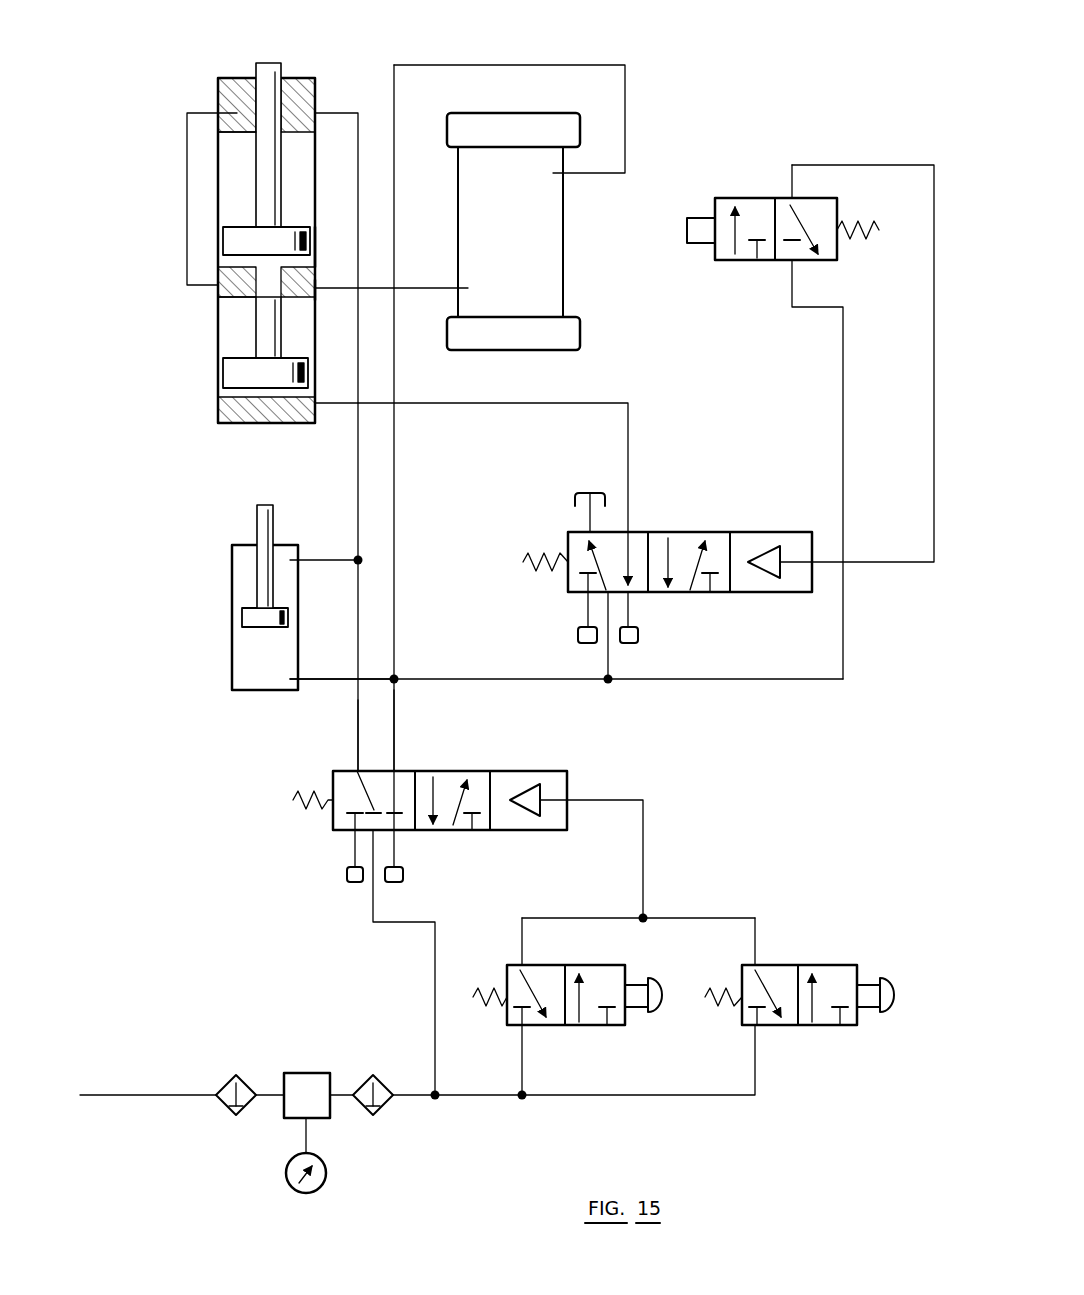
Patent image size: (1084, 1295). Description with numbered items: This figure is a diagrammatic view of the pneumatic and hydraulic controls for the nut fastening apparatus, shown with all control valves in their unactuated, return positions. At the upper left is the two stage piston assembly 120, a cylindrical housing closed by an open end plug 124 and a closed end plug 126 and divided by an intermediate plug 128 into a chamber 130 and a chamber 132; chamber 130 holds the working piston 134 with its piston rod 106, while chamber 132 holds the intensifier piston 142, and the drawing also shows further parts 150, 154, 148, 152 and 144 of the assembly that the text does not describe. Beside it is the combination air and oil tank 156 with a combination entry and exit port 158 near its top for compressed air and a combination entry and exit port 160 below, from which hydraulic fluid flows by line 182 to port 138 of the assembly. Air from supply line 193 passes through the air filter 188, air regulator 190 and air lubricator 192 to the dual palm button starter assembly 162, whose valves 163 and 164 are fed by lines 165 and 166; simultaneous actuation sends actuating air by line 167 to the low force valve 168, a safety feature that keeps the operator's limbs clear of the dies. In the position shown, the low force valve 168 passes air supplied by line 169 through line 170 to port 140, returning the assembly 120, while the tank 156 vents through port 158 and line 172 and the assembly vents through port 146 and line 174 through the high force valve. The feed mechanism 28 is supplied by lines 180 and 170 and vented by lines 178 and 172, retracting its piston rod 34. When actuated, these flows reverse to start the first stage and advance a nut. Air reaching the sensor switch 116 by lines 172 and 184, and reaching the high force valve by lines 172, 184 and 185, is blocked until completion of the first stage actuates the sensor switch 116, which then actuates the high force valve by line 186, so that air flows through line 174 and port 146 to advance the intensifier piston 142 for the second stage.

The two stage piston assembly 120 is at (277, 50).
The piston rod 106 is at (262, 66).
The open end plug 124 is at (228, 85).
The port 140 is at (322, 108).
The rod seal 154 is at (232, 140).
The chamber 130 is at (228, 180).
The mounting bracket 150 is at (187, 205).
The working piston 134 is at (232, 240).
The intermediate wall 148 is at (265, 275).
The intermediate plug 128 is at (318, 266).
The intermediate seal 152 is at (237, 297).
The port 138 is at (318, 290).
The lower piston rod 144 is at (262, 333).
The chamber 132 is at (232, 345).
The intensifier piston 142 is at (232, 374).
The closed end plug 126 is at (234, 415).
The port 146 is at (320, 409).
The combination air and oil tank 156 is at (545, 108).
The combination entry and exit port 158 is at (563, 175).
The combination entry and exit port 160 is at (458, 288).
The line 182 is at (410, 290).
The sensor switch 116 is at (748, 191).
The line 186 is at (934, 416).
The line 184 is at (843, 418).
The line 174 is at (558, 403).
The line 185 is at (612, 661).
The feed mechanism 28 is at (226, 597).
The piston rod 34 is at (275, 508).
The line 180 is at (322, 560).
The line 178 is at (317, 681).
The low force valve 168 is at (565, 768).
The line 170 is at (357, 743).
The line 172 is at (394, 722).
The line 167 is at (643, 828).
The line 169 is at (436, 928).
The valve 163 is at (636, 962).
The valve 164 is at (866, 962).
The line 165 is at (522, 1050).
The line 166 is at (698, 1095).
The dual palm button starter assembly 162 is at (705, 1122).
The line 193 is at (118, 1095).
The air filter 188 is at (228, 1074).
The air regulator 190 is at (305, 1073).
The air lubricator 192 is at (378, 1076).